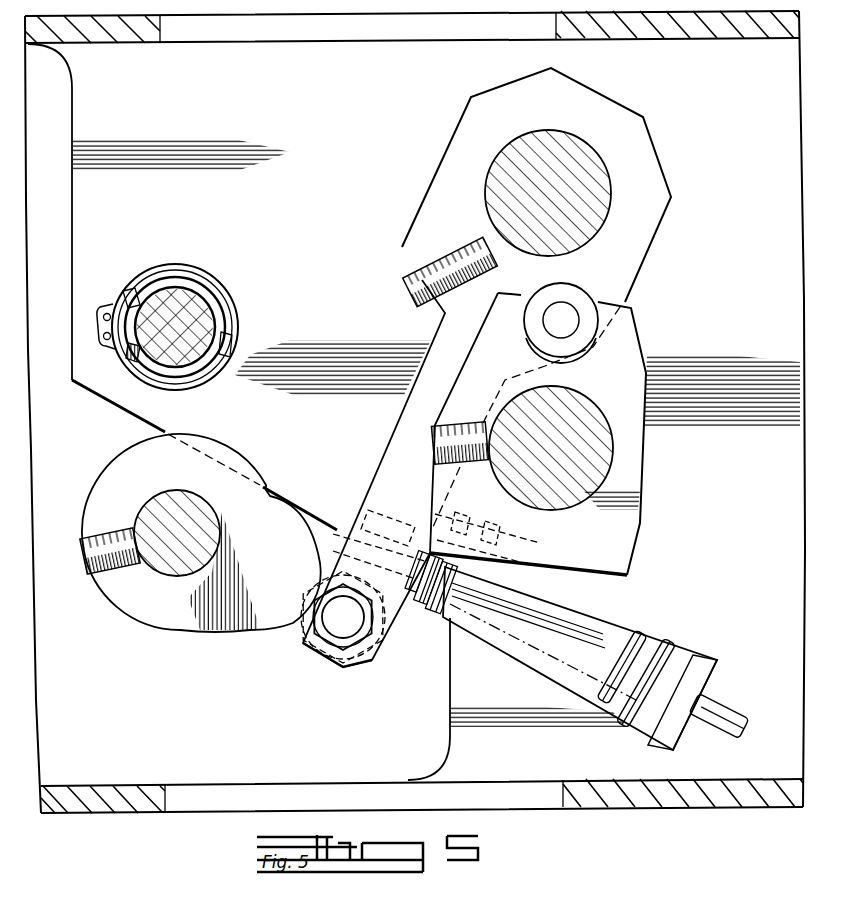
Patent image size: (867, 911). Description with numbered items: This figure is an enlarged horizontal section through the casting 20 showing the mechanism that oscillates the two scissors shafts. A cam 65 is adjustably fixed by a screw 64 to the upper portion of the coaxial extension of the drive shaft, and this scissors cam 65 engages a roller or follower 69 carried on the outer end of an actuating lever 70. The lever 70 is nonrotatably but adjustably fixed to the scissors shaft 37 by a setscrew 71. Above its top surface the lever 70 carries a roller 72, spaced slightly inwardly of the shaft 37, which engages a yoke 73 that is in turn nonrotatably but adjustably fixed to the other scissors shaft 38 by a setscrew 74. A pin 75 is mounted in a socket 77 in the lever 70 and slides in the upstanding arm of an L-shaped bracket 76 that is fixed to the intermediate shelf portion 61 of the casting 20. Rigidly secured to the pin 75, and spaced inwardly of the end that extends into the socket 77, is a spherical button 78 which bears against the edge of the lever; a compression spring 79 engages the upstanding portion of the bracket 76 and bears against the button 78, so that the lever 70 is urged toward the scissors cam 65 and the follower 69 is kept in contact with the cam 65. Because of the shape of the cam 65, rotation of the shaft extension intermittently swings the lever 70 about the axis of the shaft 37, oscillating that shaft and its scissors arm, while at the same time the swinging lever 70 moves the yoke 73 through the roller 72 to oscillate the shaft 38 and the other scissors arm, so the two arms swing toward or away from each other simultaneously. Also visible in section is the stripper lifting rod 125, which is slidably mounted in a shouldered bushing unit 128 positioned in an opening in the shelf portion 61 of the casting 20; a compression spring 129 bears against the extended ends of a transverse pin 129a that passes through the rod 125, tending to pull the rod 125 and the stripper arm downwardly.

The casting 20 is at (598, 800).
The scissors shaft 37 is at (578, 152).
The scissors shaft 38 is at (600, 447).
The intermediate shelf portion 61 is at (457, 692).
The screw 64 is at (98, 534).
The cam 65 is at (240, 620).
The roller or follower 69 is at (350, 660).
The actuating lever 70 is at (397, 432).
The setscrew 71 is at (420, 250).
The roller 72 is at (578, 298).
The yoke 73 is at (630, 338).
The setscrew 74 is at (433, 440).
The pin 75 is at (570, 630).
The L-shaped bracket 76 is at (682, 727).
The socket 77 is at (362, 505).
The spherical button 78 is at (420, 527).
The compression spring 79 is at (618, 710).
The push rod or lifting rod 125 is at (180, 300).
The shouldered bushing unit 128 is at (227, 283).
The compression spring 129 is at (227, 316).
The transverse pin 129a is at (230, 370).